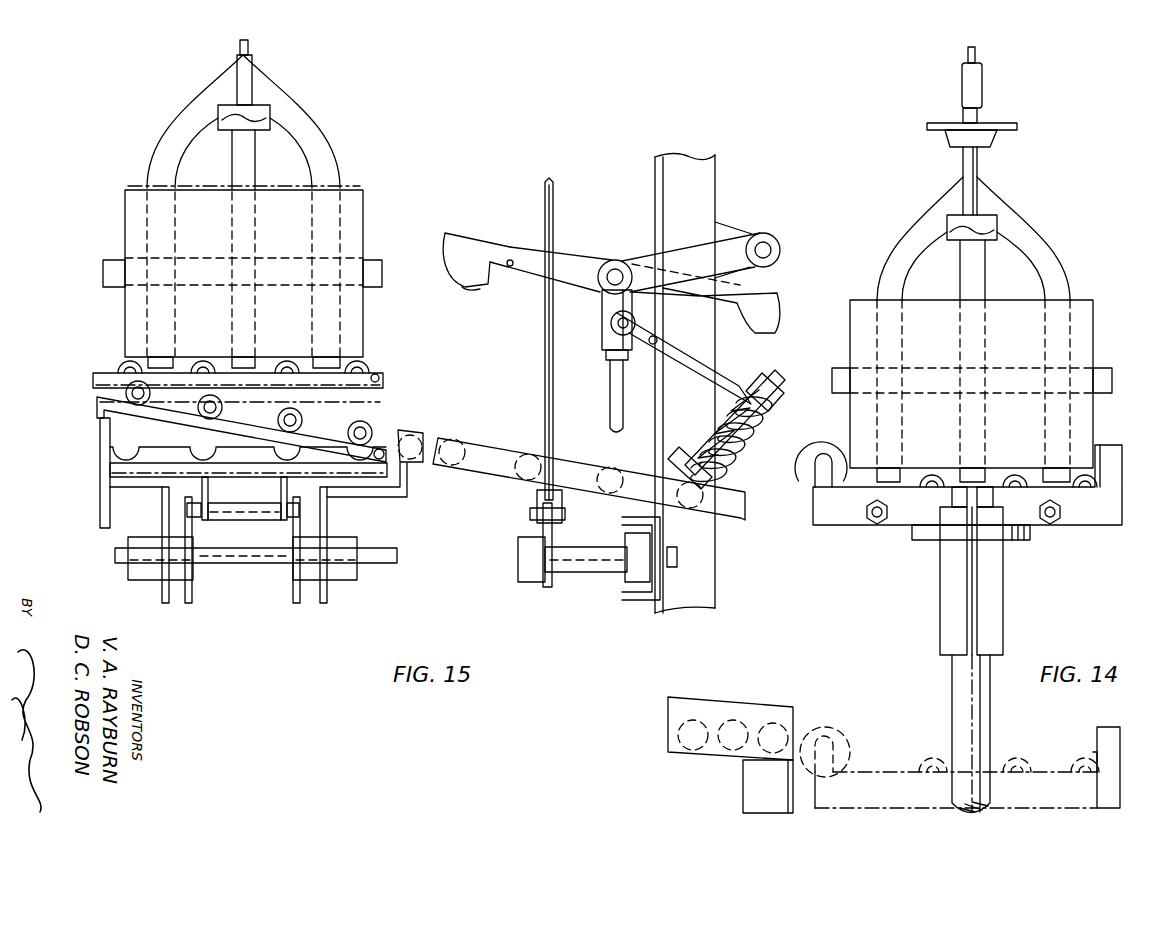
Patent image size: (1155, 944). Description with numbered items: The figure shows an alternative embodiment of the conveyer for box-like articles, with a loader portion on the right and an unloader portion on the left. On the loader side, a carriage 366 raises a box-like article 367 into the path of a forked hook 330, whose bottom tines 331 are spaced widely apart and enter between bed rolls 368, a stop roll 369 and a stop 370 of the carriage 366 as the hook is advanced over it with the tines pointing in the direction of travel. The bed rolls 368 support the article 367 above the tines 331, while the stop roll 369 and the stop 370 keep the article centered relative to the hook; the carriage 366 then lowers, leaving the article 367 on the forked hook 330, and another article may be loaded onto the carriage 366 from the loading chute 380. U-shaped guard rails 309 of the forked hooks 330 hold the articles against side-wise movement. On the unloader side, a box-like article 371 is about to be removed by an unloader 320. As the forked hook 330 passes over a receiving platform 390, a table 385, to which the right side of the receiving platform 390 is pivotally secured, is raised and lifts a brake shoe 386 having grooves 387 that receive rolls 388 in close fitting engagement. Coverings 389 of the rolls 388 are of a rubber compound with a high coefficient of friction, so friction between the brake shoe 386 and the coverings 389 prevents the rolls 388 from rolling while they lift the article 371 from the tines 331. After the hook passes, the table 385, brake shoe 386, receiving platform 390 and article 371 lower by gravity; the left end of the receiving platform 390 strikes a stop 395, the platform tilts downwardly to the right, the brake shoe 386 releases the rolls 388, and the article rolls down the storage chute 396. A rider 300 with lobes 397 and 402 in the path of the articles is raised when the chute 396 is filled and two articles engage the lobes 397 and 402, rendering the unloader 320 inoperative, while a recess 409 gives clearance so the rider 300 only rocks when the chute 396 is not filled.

In FIG. 15, the rider 300 is at (580, 260).
In FIG. 15, the U-shaped guard rail 309 is at (366, 262).
In FIG. 14, the U-shaped guard rail 309 is at (1138, 352).
In FIG. 15, the unloader 320 is at (88, 410).
In FIG. 15, the forked hook 330 is at (306, 118).
In FIG. 14, the forked hook 330 is at (1035, 228).
In FIG. 14, the bottom tine 331 is at (1072, 476).
In FIG. 14, the carriage 366 is at (1118, 526).
In FIG. 14, the box-like article 367 is at (1095, 313).
In FIG. 14, the bed roll 368 is at (927, 481).
In FIG. 14, the stop roll 369 is at (822, 443).
In FIG. 14, the stop 370 is at (1104, 448).
In FIG. 15, the box-like article 371 is at (354, 206).
In FIG. 14, the loading chute 380 is at (738, 706).
In FIG. 15, the table 385 is at (112, 470).
In FIG. 15, the brake shoe 386 is at (112, 455).
In FIG. 15, the groove 387 is at (190, 448).
In FIG. 15, the roll 388 is at (124, 372).
In FIG. 15, the covering 389 is at (363, 362).
In FIG. 15, the receiving platform 390 is at (385, 371).
In FIG. 15, the stop 395 is at (100, 433).
In FIG. 15, the storage chute 396 is at (500, 443).
In FIG. 15, the lobe 397 is at (466, 291).
In FIG. 15, the lobe 402 is at (757, 334).
In FIG. 15, the recess 409 is at (510, 262).